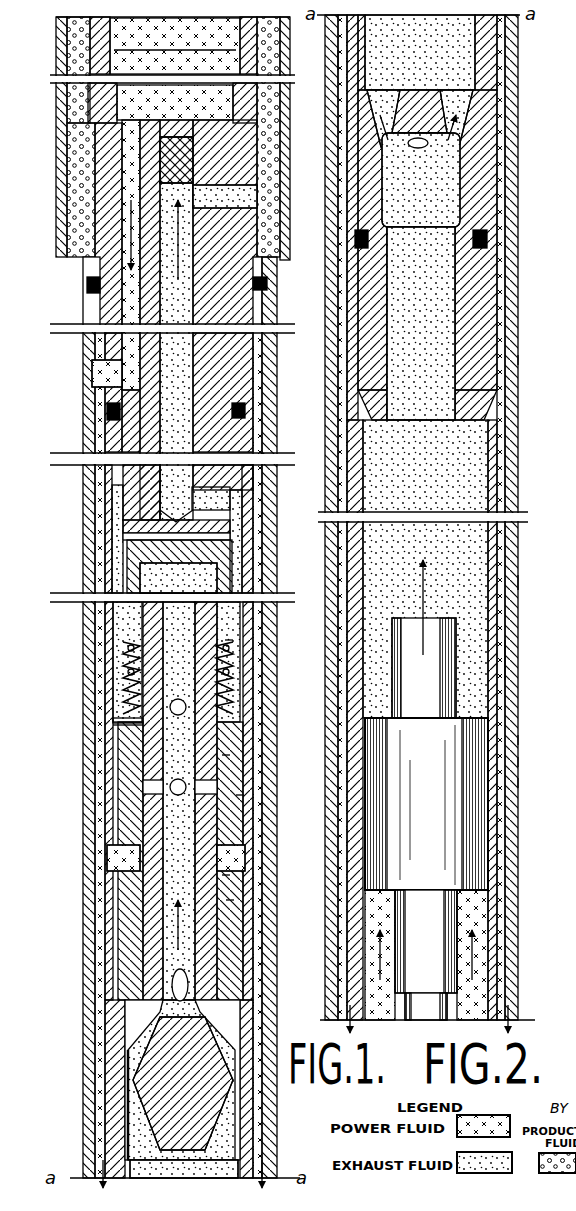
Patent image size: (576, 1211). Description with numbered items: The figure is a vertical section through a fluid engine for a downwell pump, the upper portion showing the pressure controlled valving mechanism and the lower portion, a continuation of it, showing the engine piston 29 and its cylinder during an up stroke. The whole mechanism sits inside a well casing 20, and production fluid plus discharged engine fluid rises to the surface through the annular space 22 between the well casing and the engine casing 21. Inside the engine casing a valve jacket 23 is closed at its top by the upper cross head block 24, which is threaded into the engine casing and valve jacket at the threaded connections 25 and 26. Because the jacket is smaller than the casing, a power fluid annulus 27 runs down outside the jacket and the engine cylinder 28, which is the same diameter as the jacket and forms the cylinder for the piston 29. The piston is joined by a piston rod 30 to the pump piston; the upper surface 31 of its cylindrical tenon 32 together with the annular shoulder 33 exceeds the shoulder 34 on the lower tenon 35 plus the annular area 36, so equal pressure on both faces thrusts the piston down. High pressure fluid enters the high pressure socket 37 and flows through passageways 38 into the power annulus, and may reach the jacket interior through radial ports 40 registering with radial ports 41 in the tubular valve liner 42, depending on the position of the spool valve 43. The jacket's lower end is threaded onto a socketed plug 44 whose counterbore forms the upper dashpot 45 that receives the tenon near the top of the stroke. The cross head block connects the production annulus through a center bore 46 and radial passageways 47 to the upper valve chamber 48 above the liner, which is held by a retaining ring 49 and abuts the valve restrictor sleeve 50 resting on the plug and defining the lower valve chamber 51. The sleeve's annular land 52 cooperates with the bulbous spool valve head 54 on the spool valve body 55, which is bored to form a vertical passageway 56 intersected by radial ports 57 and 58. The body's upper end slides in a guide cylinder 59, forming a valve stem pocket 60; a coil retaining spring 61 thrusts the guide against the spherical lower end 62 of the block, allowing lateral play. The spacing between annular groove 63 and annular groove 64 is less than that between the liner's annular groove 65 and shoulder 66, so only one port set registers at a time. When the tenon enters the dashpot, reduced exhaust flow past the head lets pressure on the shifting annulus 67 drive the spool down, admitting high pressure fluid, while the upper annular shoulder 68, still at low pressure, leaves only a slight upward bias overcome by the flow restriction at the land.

In FIG. 1, the well casing 20 is at (57, 160).
In FIG. 1, the engine casing 21 is at (255, 665).
In FIG. 1, the annular space 22 is at (72, 258).
In FIG. 1, the valve jacket 23 is at (240, 690).
In FIG. 2, the valve jacket 23 is at (337, 58).
In FIG. 1, the upper cross head block 24 is at (92, 400).
In FIG. 1, the threaded connection 25 is at (268, 312).
In FIG. 1, the threaded connection 26 is at (110, 440).
In FIG. 1, the power fluid annulus 27 is at (262, 520).
In FIG. 2, the engine cylinder 28 is at (505, 665).
In FIG. 2, the engine piston 29 is at (360, 825).
In FIG. 2, the piston rod 30 is at (470, 1000).
In FIG. 1, the upper surface 31 is at (270, 600).
In FIG. 2, the cylindrical tenon 32 is at (492, 635).
In FIG. 2, the annular shoulder 33 is at (345, 745).
In FIG. 2, the shoulder 34 is at (505, 955).
In FIG. 2, the lower tenon 35 is at (362, 935).
In FIG. 2, the annular area 36 is at (480, 900).
In FIG. 1, the high pressure socket 37 is at (245, 30).
In FIG. 1, the passageways 38 is at (90, 300).
In FIG. 1, the radial ports 40 is at (115, 862).
In FIG. 1, the radial ports 41 is at (240, 858).
In FIG. 1, the tubular valve liner 42 is at (110, 925).
In FIG. 2, the tubular valve liner 42 is at (540, 582).
In FIG. 1, the spool valve 43 is at (218, 785).
In FIG. 2, the socketed plug 44 is at (487, 163).
In FIG. 2, the upper dashpot 45 is at (390, 327).
In FIG. 1, the center bore 46 is at (130, 343).
In FIG. 1, the radial passageways 47 is at (255, 200).
In FIG. 1, the upper valve chamber 48 is at (112, 618).
In FIG. 1, the retaining ring 49 is at (235, 718).
In FIG. 1, the valve restrictor sleeve 50 is at (118, 1020).
In FIG. 2, the valve restrictor sleeve 50 is at (540, 740).
In FIG. 1, the lower valve chamber 51 is at (235, 1165).
In FIG. 2, the lower valve chamber 51 is at (455, 55).
In FIG. 1, the annular land 52 is at (130, 1115).
In FIG. 2, the annular land 52 is at (540, 762).
In FIG. 1, the bulbous spool valve head 54 is at (135, 1080).
In FIG. 2, the bulbous spool valve head 54 is at (540, 783).
In FIG. 1, the spool valve body 55 is at (220, 945).
In FIG. 1, the vertical passageway 56 is at (170, 750).
In FIG. 1, the radial ports 57 is at (240, 795).
In FIG. 1, the radial ports 58 is at (135, 710).
In FIG. 1, the guide cylinder 59 is at (235, 570).
In FIG. 1, the valve stem pocket 60 is at (130, 560).
In FIG. 1, the coil retaining spring 61 is at (232, 640).
In FIG. 1, the spherical lower end 62 is at (128, 540).
In FIG. 1, the annular groove 63 is at (230, 755).
In FIG. 1, the annular groove 64 is at (150, 790).
In FIG. 1, the annular groove 65 is at (225, 875).
In FIG. 1, the shoulder 66 is at (125, 725).
In FIG. 1, the shifting annulus 67 is at (230, 900).
In FIG. 1, the upper annular shoulder 68 is at (128, 660).
In FIG. 2, the upper annular shoulder 68 is at (540, 360).